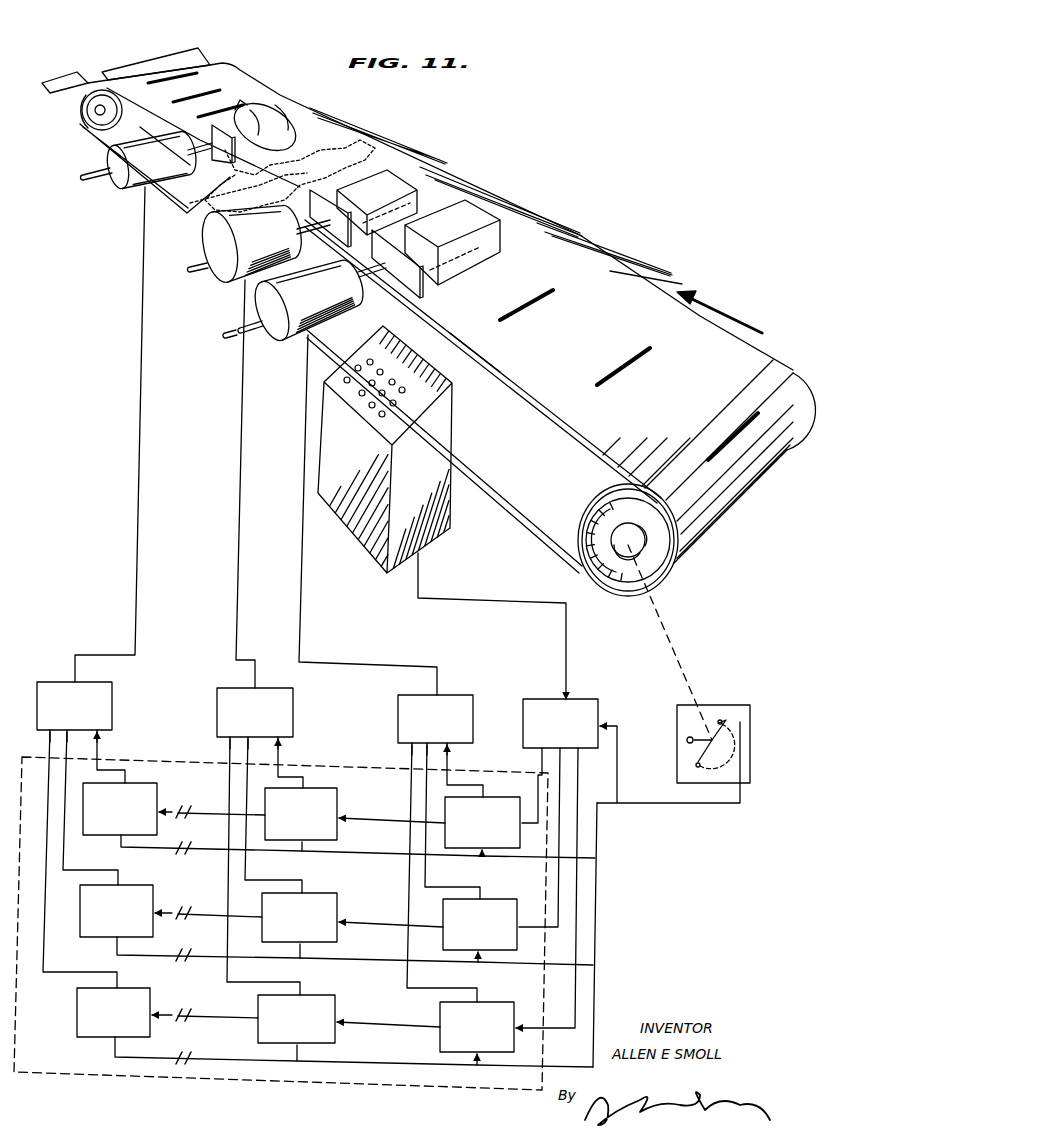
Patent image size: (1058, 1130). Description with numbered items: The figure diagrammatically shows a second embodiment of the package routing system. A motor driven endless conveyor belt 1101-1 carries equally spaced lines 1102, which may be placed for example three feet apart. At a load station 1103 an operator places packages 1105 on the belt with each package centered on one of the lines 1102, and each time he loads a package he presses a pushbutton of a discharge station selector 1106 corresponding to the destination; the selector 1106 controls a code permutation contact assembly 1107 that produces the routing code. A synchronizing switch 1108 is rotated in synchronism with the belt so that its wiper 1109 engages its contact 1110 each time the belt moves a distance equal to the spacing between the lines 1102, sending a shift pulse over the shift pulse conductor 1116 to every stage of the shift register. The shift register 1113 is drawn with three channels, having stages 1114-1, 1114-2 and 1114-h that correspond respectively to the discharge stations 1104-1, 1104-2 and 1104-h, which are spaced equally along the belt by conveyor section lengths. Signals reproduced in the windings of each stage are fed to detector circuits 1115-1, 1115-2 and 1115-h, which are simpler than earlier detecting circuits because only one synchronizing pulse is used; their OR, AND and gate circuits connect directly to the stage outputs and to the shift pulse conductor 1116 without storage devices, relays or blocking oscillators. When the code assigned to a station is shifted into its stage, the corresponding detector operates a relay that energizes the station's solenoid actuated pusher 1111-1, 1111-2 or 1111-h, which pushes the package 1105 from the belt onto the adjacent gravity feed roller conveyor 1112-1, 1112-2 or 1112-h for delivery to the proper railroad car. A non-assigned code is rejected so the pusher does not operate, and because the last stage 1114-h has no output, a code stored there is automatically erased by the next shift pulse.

The endless conveyor belt 1101-1 is at (232, 64).
The lines 1102 is at (530, 303).
The load station 1103 is at (497, 522).
The discharge station 1104-h is at (93, 199).
The discharge station 1104-2 is at (205, 256).
The discharge station 1104-1 is at (300, 358).
The packages 1105 is at (503, 243).
The discharge station selector 1106 is at (450, 432).
The code permutation contact assembly 1107 is at (585, 707).
The synchronizing switch 1108 is at (677, 772).
The wiper 1109 is at (712, 740).
The contact 1110 is at (725, 722).
The solenoid actuated pusher 1111-h is at (107, 155).
The solenoid actuated pusher 1111-2 is at (220, 278).
The solenoid actuated pusher 1111-1 is at (298, 340).
The gravity feed roller conveyor 1112-h is at (405, 148).
The gravity feed roller conveyor 1112-2 is at (535, 205).
The gravity feed roller conveyor 1112-1 is at (613, 248).
The shift register 1113 is at (232, 1081).
The shift register stage 1114-h is at (157, 799).
The shift register stage 1114-2 is at (337, 801).
The shift register stage 1114-1 is at (440, 845).
The detector circuit 1115-h is at (95, 685).
The detector circuit 1115-2 is at (280, 692).
The detector circuit 1115-1 is at (460, 708).
The shift pulse conductor 1116 is at (668, 805).